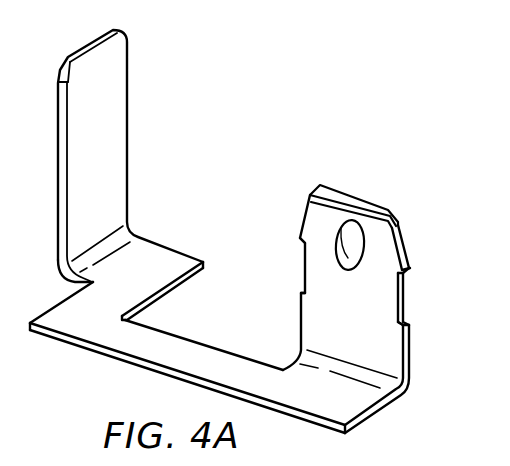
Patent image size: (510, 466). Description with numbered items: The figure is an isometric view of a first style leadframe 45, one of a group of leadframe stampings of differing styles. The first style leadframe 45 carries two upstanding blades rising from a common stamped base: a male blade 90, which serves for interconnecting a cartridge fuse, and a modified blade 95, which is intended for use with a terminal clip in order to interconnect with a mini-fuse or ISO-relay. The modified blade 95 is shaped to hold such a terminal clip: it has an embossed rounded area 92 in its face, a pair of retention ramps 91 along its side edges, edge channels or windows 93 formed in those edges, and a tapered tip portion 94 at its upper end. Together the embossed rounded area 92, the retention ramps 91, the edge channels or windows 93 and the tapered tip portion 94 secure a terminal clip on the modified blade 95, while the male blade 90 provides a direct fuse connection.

The first style leadframe 45 is at (100, 377).
The male blade 90 is at (102, 128).
The retention ramps 91 is at (300, 238).
The embossed rounded area 92 is at (352, 237).
The edge channels or windows 93 is at (305, 267).
The tapered tip portion 94 is at (343, 168).
The modified blade 95 is at (330, 323).